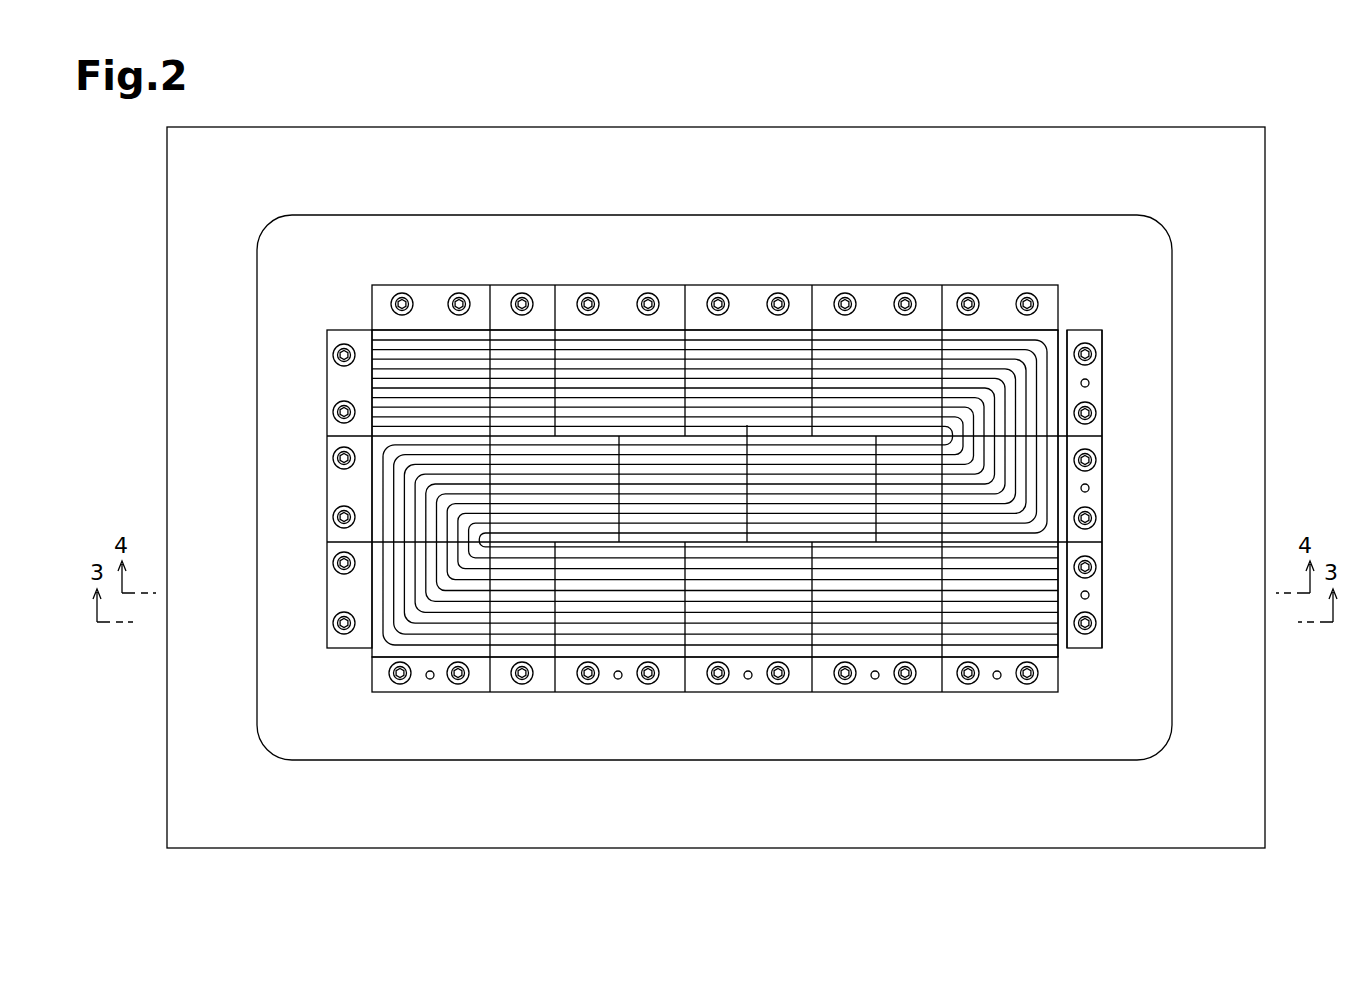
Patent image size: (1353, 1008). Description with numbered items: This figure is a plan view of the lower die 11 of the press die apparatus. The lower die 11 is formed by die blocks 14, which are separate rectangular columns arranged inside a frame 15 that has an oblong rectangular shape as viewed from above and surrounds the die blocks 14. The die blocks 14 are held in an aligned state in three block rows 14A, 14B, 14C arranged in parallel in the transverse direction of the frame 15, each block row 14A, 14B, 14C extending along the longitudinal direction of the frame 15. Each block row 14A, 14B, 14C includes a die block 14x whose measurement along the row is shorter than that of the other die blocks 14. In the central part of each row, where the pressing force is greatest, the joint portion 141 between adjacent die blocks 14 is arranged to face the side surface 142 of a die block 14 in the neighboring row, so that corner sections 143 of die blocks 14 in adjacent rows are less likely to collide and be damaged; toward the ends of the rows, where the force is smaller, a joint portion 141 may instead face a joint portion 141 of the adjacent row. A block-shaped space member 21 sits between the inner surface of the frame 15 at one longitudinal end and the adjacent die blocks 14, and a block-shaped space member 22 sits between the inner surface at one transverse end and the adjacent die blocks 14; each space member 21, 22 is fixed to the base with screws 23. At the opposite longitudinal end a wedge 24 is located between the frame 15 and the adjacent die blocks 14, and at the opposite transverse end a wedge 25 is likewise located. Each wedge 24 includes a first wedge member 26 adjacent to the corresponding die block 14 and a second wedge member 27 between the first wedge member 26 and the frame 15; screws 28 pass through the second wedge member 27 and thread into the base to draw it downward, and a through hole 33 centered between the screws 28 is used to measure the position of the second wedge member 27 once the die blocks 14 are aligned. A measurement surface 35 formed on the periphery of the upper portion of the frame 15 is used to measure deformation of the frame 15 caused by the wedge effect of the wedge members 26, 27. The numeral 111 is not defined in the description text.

The lower die 11 is at (433, 326).
The die block 14 is at (664, 487).
The block row 14A is at (375, 382).
The block row 14B is at (375, 492).
The block row 14C is at (375, 597).
The die block 14x is at (543, 337).
The frame 15 is at (707, 127).
The space member 21 is at (333, 641).
The space member 22 is at (463, 285).
The screw 23 is at (775, 285).
The wedge 24 is at (1094, 269).
The wedge 25 is at (463, 692).
The first wedge member 26 is at (1067, 330).
The second wedge member 27 is at (1097, 330).
The screw 28 is at (1097, 413).
The through hole 33 is at (1090, 383).
The measurement surface 35 is at (722, 215).
The substrate edge 111 is at (1006, 337).
The joint portion 141 is at (482, 442).
The side surface 142 is at (599, 436).
The corner section 143 is at (760, 435).